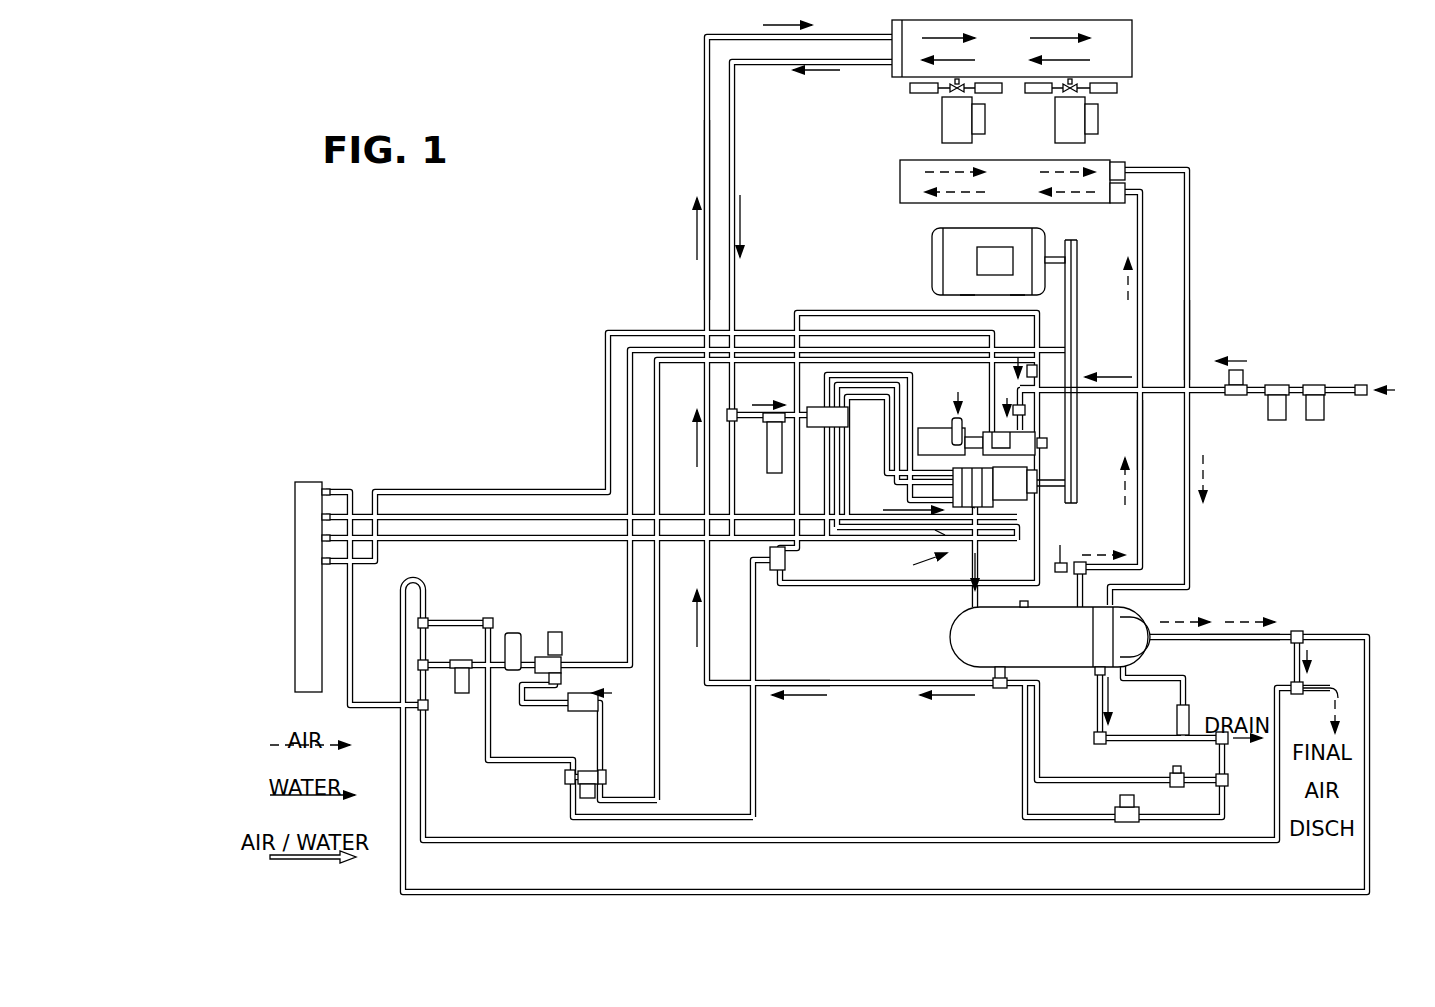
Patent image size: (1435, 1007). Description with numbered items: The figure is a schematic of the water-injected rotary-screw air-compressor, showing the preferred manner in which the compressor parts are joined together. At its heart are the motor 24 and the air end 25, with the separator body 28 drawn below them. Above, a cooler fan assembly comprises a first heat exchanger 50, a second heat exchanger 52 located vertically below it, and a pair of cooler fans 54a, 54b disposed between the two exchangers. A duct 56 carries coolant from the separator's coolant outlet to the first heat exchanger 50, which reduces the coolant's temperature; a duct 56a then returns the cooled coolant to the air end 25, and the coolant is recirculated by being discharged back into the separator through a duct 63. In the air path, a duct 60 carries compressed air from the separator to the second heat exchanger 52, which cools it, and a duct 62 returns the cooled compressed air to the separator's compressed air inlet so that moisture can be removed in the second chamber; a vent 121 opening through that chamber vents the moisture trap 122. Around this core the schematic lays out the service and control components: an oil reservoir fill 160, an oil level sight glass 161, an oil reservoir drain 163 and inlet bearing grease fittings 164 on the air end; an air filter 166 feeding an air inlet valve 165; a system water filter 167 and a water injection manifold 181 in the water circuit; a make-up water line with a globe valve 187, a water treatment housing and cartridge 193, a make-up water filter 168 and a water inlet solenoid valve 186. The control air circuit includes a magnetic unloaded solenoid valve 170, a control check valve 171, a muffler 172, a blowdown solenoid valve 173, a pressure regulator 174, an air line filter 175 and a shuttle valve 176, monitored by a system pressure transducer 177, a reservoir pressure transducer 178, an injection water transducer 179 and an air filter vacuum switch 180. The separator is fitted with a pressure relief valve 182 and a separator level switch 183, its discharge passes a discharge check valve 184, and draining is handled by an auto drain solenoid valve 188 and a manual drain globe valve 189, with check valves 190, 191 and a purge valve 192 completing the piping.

The motor 24 is at (930, 258).
The air end 25 is at (1038, 492).
The separator body 28 is at (1140, 608).
The first heat exchanger 50 is at (1142, 47).
The second heat exchanger 52 is at (1127, 162).
The cooler fan 54a is at (1098, 115).
The cooler fan 54b is at (985, 115).
The duct 56 is at (842, 690).
The duct 56a is at (738, 132).
The duct 60 is at (1143, 528).
The duct 62 is at (1190, 425).
The duct 63 is at (1000, 492).
The vent to moisture trap 121 is at (1150, 612).
The moisture trap 122 is at (1192, 703).
The oil reservoir fill 160 is at (957, 472).
The oil level sight glass 161 is at (950, 525).
The oil reservoir drain 163 is at (975, 505).
The inlet bearing grease fitting 164 is at (1048, 470).
The air inlet valve 165 is at (995, 428).
The air filter 166 is at (940, 438).
The system water filter 167 is at (776, 474).
The make-up water filter 168 is at (1283, 385).
The magnetic unloaded solenoid valve 170 is at (562, 665).
The control check valve 171 is at (614, 708).
The muffler 172 is at (553, 631).
The blowdown solenoid valve 173 is at (588, 771).
The pressure regulator 174 is at (509, 632).
The air line filter 175 is at (463, 696).
The shuttle valve 176 is at (417, 663).
The system pressure transducer 177 is at (312, 482).
The reservoir pressure transducer 178 is at (322, 516).
The injection water transducer 179 is at (322, 538).
The air filter vacuum switch 180 is at (322, 561).
The water injection manifold 181 is at (808, 407).
The pressure relief valve 182 is at (1068, 544).
The separator level switch 183 is at (1043, 615).
The discharge check valve 184 is at (1285, 688).
The water inlet solenoid valve 186 is at (1250, 372).
The globe valve 187 is at (1362, 373).
The auto drain solenoid valve 188 is at (1128, 823).
The manual drain globe valve 189 is at (1172, 775).
The check valve 190 is at (1027, 410).
The check valve 191 is at (1040, 370).
The purge valve 192 is at (770, 580).
The water treatment housing and cartridge 193 is at (1320, 420).